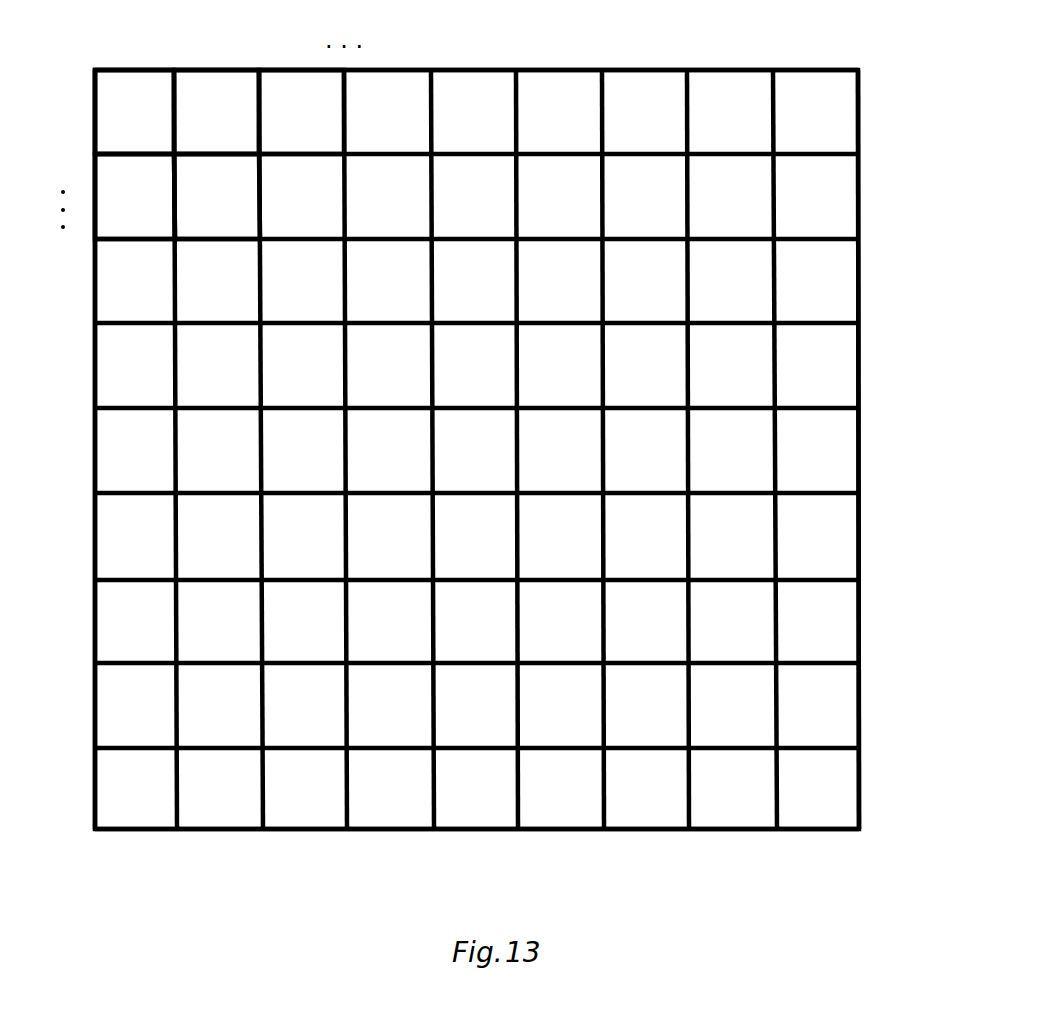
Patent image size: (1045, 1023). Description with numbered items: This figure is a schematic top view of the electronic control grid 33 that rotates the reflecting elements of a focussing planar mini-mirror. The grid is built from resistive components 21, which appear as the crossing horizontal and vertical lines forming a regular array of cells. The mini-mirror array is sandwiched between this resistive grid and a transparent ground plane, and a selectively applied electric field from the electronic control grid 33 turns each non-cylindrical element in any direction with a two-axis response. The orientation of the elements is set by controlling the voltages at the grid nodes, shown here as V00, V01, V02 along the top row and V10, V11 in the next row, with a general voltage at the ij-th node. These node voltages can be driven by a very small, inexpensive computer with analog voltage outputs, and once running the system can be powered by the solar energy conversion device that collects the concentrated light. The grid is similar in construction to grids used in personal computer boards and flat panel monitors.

The resistive components 21 is at (860, 367).
The electronic control grid 33 is at (926, 790).
The voltage at node 00 V00 is at (121, 88).
The voltage at node 01 V01 is at (206, 88).
The voltage at node 02 V02 is at (293, 88).
The voltage at node 10 V10 is at (110, 185).
The voltage at node 11 V11 is at (196, 175).